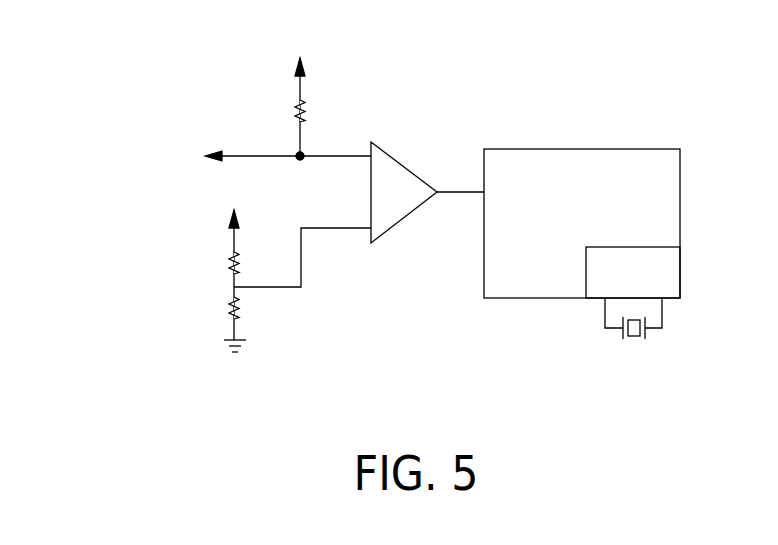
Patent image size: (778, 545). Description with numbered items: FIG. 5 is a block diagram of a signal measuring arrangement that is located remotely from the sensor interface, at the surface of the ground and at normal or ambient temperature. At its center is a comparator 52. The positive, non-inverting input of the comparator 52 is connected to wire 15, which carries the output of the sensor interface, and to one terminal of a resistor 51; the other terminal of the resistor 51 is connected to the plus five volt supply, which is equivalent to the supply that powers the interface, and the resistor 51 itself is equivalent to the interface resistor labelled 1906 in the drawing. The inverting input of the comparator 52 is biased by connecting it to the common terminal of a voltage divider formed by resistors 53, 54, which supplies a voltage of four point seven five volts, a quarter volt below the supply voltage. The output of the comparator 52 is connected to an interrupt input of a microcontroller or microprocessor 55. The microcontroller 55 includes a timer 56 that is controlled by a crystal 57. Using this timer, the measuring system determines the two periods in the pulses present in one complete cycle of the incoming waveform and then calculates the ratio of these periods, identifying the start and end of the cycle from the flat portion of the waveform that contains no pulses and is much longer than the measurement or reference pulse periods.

The wire 15 is at (65, 159).
The resistor 51 is at (288, 110).
The comparator 52 is at (405, 167).
The resistor 53 is at (245, 263).
The resistor 54 is at (222, 300).
The microcontroller 55 is at (637, 157).
The timer 56 is at (670, 295).
The crystal 57 is at (648, 335).
The sensor interface node 1906 is at (236, 140).